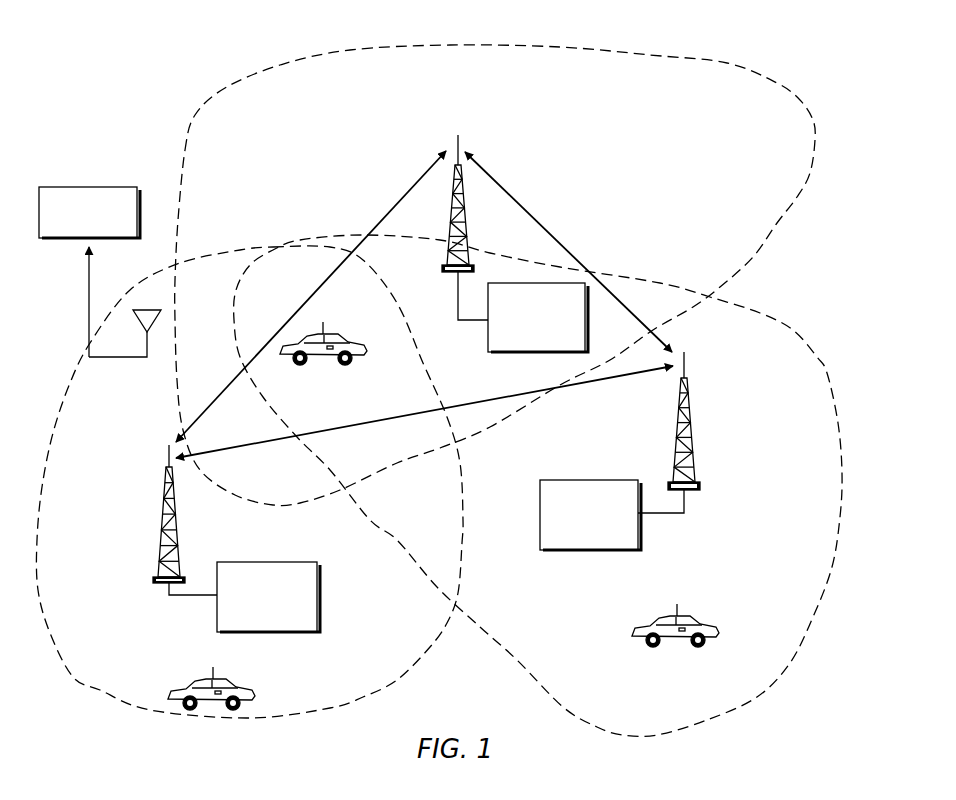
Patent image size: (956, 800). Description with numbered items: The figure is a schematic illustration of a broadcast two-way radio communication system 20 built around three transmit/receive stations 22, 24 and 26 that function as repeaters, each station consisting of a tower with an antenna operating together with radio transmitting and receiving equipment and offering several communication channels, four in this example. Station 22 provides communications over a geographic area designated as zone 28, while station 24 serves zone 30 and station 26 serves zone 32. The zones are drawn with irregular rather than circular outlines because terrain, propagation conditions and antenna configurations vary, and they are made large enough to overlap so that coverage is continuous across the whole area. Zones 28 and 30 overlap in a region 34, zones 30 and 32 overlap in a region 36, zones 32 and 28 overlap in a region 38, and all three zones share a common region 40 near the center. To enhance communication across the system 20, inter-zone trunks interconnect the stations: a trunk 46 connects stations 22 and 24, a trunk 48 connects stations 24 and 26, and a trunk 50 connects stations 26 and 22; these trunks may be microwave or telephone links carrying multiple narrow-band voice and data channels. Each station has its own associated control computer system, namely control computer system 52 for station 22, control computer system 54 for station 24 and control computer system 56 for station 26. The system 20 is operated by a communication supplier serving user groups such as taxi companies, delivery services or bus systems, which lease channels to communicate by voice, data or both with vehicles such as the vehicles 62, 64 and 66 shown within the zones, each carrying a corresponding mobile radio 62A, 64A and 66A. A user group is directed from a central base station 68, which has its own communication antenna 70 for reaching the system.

The broadcast two-way radio communication system 20 is at (424, 26).
The transmit/receive station 22 is at (462, 212).
The transmit/receive station 24 is at (691, 411).
The transmit/receive station 26 is at (162, 507).
The zone 28 is at (662, 55).
The zone 30 is at (768, 316).
The zone 32 is at (393, 683).
The region 34 is at (646, 316).
The region 36 is at (422, 545).
The region 38 is at (191, 289).
The region 40 is at (269, 284).
The trunk 46 is at (521, 205).
The trunk 48 is at (462, 406).
The trunk 50 is at (378, 222).
The control computer system 52 is at (488, 331).
The control computer system 54 is at (540, 520).
The control computer system 56 is at (318, 590).
The vehicle 62 is at (315, 365).
The mobile radio 62A is at (325, 336).
The vehicle 64 is at (640, 625).
The mobile radio 64A is at (686, 620).
The vehicle 66 is at (180, 692).
The mobile radio 66A is at (226, 681).
The central base station 68 is at (79, 187).
The communication antenna 70 is at (143, 310).